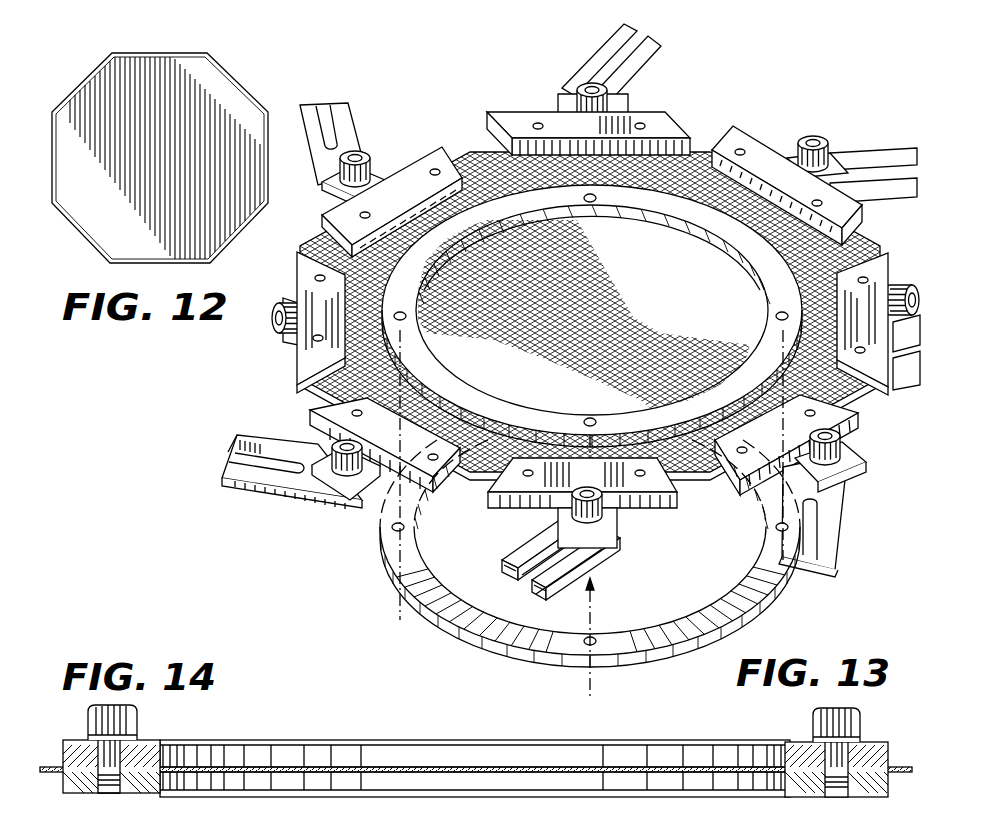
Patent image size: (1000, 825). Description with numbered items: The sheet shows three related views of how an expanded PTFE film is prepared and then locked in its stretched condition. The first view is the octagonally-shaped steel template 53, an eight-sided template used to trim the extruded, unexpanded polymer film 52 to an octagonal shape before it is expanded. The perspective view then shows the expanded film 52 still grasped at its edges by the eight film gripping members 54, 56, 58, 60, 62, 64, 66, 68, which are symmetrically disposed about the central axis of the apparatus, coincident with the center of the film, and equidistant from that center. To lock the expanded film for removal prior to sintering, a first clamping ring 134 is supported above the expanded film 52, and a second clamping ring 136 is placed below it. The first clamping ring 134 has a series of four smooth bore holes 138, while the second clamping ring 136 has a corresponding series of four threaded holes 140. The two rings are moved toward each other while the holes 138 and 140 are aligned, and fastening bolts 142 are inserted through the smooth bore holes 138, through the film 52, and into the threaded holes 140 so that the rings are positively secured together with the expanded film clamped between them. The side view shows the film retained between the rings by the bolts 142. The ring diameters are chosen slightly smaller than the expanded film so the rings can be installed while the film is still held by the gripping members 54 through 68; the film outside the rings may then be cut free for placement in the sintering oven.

In FIG. 12, the octagonally-shaped steel template 53 is at (228, 80).
In FIG. 13, the polymer film 52 is at (475, 148).
In FIG. 14, the polymer film 52 is at (362, 760).
In FIG. 13, the film gripping member 54 is at (642, 510).
In FIG. 13, the film gripping member 56 is at (855, 430).
In FIG. 13, the film gripping member 58 is at (888, 268).
In FIG. 13, the film gripping member 60 is at (772, 146).
In FIG. 13, the film gripping member 62 is at (652, 120).
In FIG. 13, the film gripping member 64 is at (400, 165).
In FIG. 13, the film gripping member 66 is at (297, 276).
In FIG. 13, the film gripping member 68 is at (315, 415).
In FIG. 13, the first clamping ring 134 is at (455, 385).
In FIG. 14, the first clamping ring 134 is at (470, 745).
In FIG. 13, the second clamping ring 136 is at (626, 660).
In FIG. 14, the second clamping ring 136 is at (560, 792).
In FIG. 13, the smooth bore holes 138 is at (590, 202).
In FIG. 14, the smooth bore holes 138 is at (150, 750).
In FIG. 13, the threaded holes 140 is at (402, 530).
In FIG. 14, the threaded holes 140 is at (118, 788).
In FIG. 14, the fastening bolts 142 is at (90, 724).